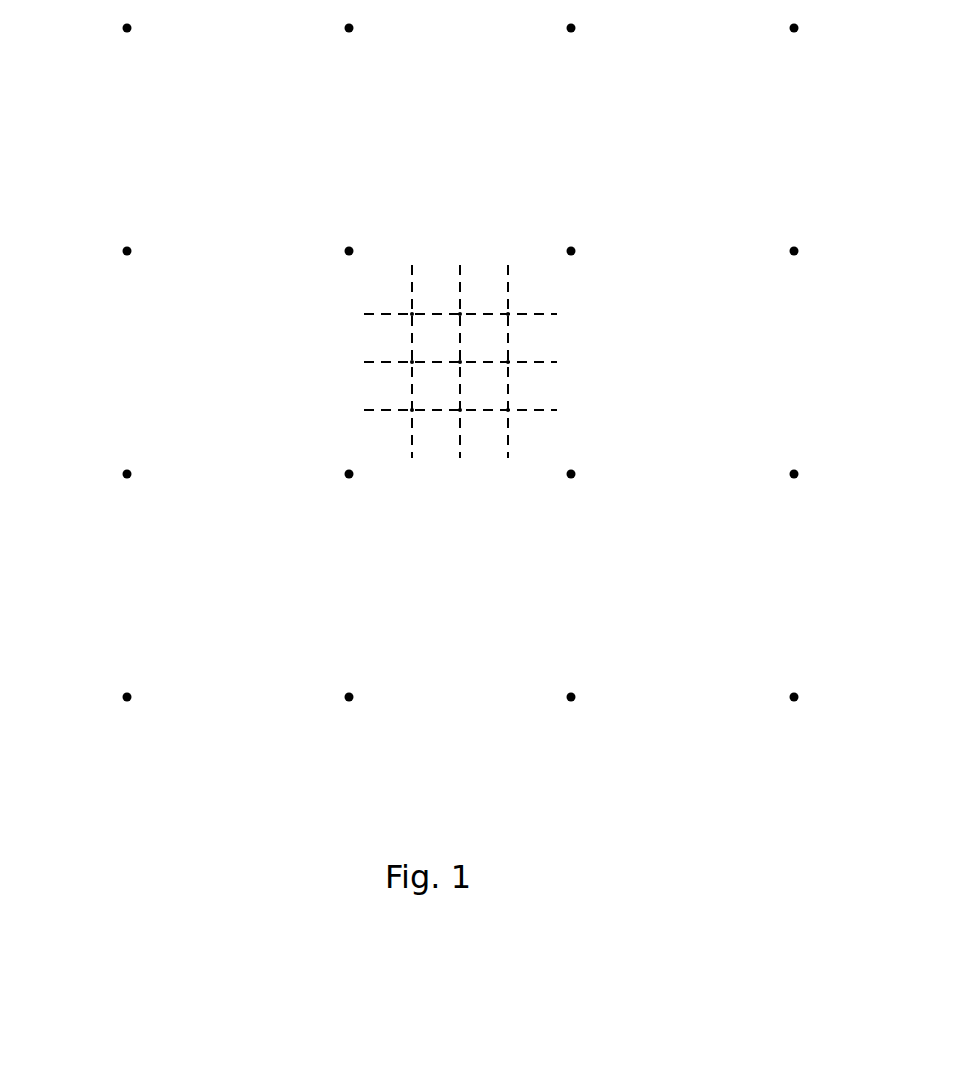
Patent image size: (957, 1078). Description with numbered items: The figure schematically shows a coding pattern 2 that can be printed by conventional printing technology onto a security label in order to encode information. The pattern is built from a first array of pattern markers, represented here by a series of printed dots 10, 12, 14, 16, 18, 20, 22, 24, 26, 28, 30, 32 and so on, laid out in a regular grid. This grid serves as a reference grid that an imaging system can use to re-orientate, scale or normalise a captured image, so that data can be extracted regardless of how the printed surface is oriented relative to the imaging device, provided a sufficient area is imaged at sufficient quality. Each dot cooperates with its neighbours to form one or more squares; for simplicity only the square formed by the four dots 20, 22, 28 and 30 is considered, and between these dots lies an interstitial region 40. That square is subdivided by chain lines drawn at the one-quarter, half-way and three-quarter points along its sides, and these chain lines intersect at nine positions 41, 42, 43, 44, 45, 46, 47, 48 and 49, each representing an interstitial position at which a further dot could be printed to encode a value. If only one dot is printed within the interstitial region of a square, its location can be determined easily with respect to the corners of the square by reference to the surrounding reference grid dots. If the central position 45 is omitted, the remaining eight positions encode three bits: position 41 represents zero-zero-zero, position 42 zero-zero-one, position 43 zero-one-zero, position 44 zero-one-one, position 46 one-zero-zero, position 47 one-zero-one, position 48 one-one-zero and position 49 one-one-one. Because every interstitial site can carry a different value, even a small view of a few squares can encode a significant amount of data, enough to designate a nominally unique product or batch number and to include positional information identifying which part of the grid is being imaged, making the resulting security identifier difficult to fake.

The arrangement of objects 2 is at (273, 749).
The printed dot 10 is at (124, 34).
The printed dot 12 is at (346, 34).
The printed dot 14 is at (568, 34).
The printed dot 16 is at (791, 34).
The printed dot 18 is at (124, 257).
The printed dot 20 is at (346, 257).
The printed dot 22 is at (569, 247).
The printed dot 24 is at (792, 247).
The printed dot 26 is at (124, 480).
The printed dot 28 is at (346, 480).
The printed dot 30 is at (568, 480).
The printed dot 32 is at (791, 480).
The interstitial region 40 is at (646, 369).
The interstitial position 41 is at (411, 315).
The interstitial position 42 is at (459, 313).
The interstitial position 43 is at (509, 313).
The interstitial position 44 is at (411, 363).
The central position 45 is at (461, 361).
The interstitial position 46 is at (509, 361).
The interstitial position 47 is at (411, 411).
The interstitial position 48 is at (461, 411).
The interstitial position 49 is at (509, 411).